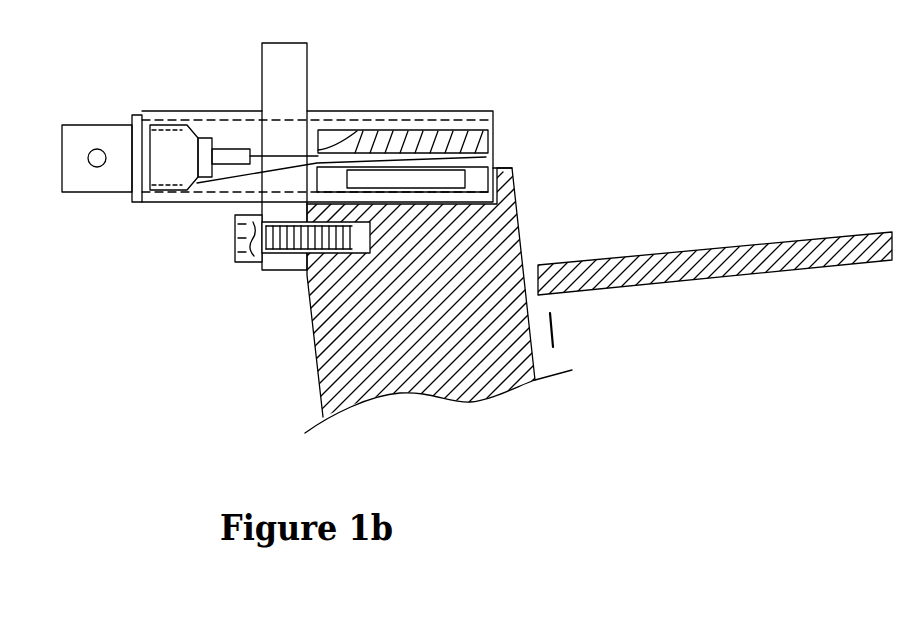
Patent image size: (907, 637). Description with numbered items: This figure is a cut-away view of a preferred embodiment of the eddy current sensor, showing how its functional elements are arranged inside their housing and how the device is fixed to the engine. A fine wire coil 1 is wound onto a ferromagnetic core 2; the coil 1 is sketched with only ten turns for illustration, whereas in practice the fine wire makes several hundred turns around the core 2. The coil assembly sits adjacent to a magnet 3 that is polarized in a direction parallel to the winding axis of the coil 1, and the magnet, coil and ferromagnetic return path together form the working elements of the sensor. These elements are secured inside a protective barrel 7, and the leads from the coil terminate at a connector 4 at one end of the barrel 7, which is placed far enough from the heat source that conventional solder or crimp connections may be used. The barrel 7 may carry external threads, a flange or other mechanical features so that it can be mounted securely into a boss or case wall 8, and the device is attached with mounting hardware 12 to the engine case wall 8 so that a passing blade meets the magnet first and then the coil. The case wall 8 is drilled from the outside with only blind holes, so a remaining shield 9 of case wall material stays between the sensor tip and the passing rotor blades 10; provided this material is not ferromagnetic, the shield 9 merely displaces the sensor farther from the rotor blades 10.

The coil 1 is at (427, 127).
The core 2 is at (487, 142).
The magnet 3 is at (495, 167).
The connector 4 is at (112, 123).
The barrel 7 is at (357, 112).
The case wall 8 is at (519, 232).
The shield 9 is at (505, 170).
The rotor blades 10 is at (713, 248).
The mounting hardware 12 is at (235, 257).